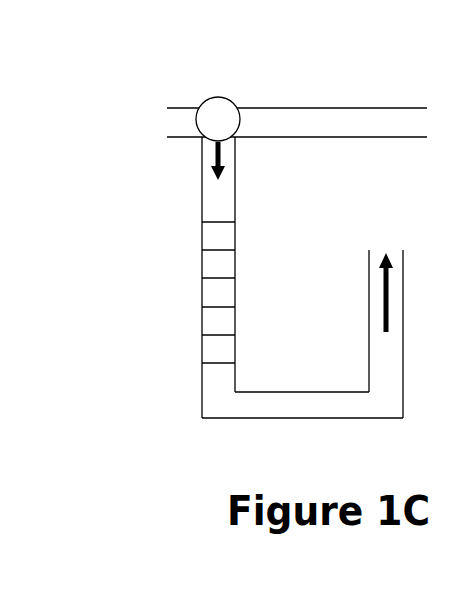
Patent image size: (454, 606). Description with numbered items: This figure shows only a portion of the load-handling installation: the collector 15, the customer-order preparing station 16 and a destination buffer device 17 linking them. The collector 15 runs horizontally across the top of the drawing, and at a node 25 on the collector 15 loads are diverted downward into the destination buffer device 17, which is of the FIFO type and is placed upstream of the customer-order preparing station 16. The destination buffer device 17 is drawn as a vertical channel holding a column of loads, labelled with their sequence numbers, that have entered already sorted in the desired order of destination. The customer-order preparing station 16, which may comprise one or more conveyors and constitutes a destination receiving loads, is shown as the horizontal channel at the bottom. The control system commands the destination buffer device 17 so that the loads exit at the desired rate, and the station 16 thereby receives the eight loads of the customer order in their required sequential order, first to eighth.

The collector 15 is at (283, 108).
The node 25 is at (217, 98).
The destination buffer device 17 is at (202, 315).
The customer-order preparing station 16 is at (212, 406).